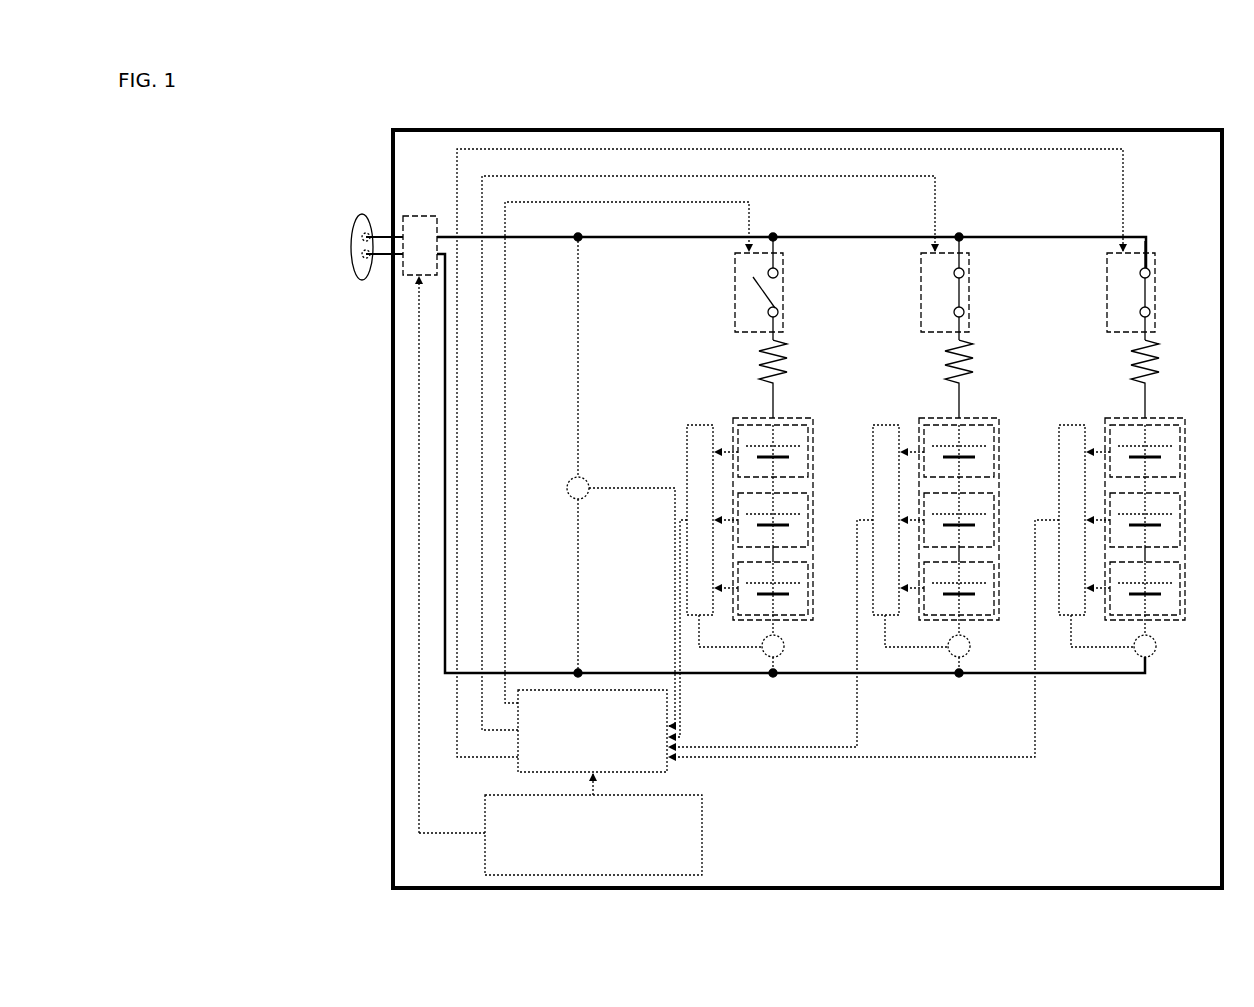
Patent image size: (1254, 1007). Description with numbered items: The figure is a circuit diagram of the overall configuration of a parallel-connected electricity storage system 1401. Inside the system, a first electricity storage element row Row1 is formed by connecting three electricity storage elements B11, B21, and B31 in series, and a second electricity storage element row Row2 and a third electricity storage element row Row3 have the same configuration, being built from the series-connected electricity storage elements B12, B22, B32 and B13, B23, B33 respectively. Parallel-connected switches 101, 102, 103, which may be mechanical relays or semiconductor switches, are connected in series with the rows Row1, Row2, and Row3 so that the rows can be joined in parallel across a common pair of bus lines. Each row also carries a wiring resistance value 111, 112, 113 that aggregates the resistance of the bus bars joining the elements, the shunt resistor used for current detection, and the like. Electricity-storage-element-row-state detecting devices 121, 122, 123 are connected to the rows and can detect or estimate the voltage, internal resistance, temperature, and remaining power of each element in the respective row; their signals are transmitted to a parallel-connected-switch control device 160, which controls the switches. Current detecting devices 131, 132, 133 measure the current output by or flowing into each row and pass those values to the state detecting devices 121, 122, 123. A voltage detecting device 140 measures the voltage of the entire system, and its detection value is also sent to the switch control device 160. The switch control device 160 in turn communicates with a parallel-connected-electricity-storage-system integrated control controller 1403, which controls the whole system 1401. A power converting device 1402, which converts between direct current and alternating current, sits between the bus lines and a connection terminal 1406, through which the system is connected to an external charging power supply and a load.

The parallel-connected electricity storage system 1401 is at (396, 128).
The power converting device 1402 is at (435, 214).
The connection terminal 1406 is at (364, 213).
The parallel-connected-electricity-storage-system integrated control controller 1403 is at (490, 796).
The parallel-connected-switch control device 160 is at (548, 690).
The voltage detecting device 140 is at (577, 476).
The parallel-connected switch 101 is at (735, 293).
The parallel-connected switch 102 is at (921, 293).
The parallel-connected switch 103 is at (1107, 293).
The wiring resistance value 111 is at (759, 373).
The wiring resistance value 112 is at (945, 373).
The wiring resistance value 113 is at (1129, 373).
The electricity-storage-element-row-state detecting device 121 is at (690, 452).
The electricity-storage-element-row-state detecting device 122 is at (876, 452).
The electricity-storage-element-row-state detecting device 123 is at (1062, 452).
The current detecting device 131 is at (760, 646).
The current detecting device 132 is at (946, 646).
The current detecting device 133 is at (1132, 646).
The electricity storage element row Row1 is at (733, 418).
The electricity storage element row Row2 is at (919, 418).
The electricity storage element row Row3 is at (1105, 418).
The electricity storage element B11 is at (808, 425).
The electricity storage element B21 is at (808, 493).
The electricity storage element B31 is at (808, 562).
The electricity storage element B12 is at (994, 425).
The electricity storage element B22 is at (994, 493).
The electricity storage element B32 is at (994, 562).
The electricity storage element B13 is at (1180, 425).
The electricity storage element B23 is at (1180, 493).
The electricity storage element B33 is at (1180, 562).